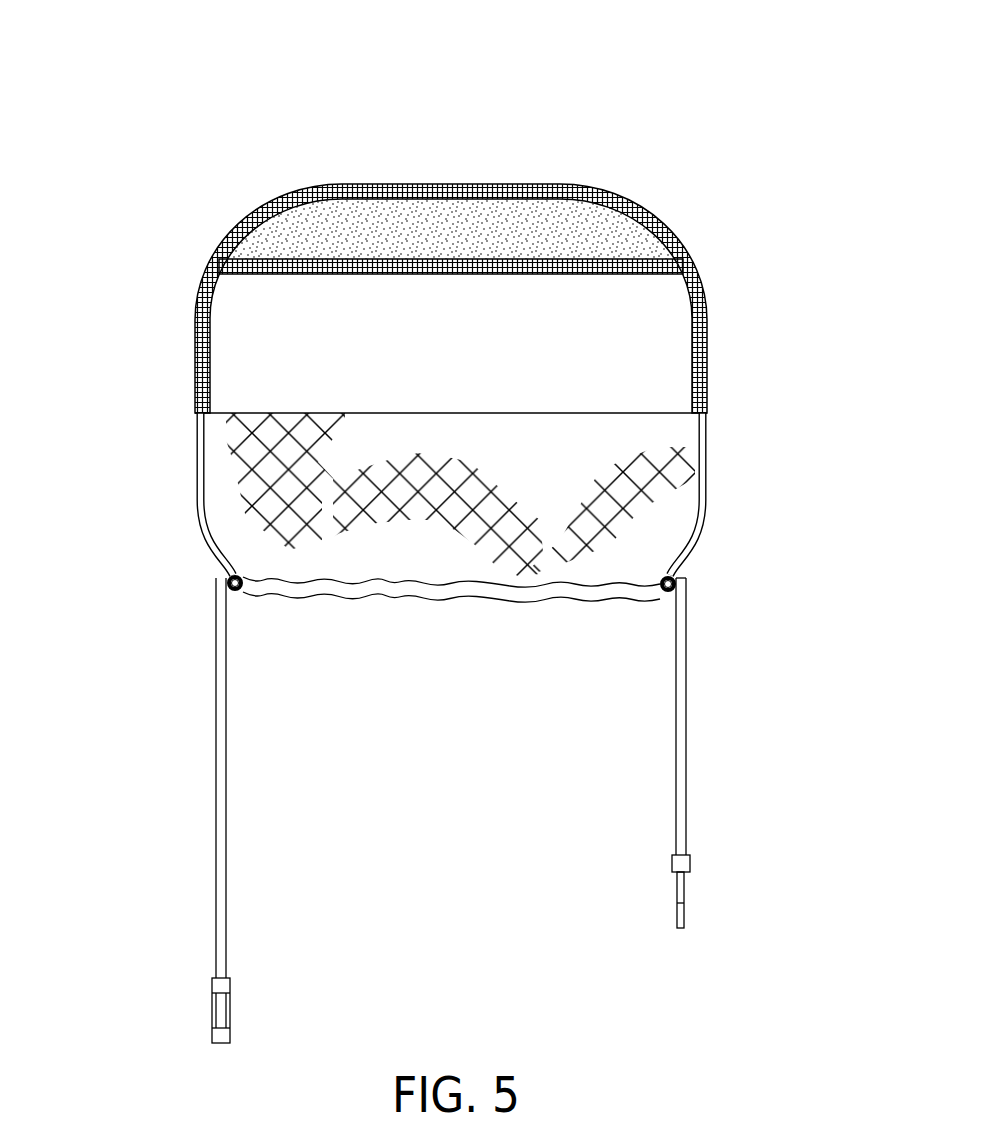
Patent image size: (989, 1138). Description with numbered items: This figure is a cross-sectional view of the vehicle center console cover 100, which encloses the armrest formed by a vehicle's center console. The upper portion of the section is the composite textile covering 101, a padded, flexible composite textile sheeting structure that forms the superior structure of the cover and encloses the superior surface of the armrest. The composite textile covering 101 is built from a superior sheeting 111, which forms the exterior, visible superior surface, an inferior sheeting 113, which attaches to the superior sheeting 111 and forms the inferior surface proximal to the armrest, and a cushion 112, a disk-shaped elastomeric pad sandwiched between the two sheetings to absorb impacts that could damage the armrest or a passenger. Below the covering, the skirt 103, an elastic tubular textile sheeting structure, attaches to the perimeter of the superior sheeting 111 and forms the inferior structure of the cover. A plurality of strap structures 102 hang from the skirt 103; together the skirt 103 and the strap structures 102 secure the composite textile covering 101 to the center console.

The vehicle center console cover 100 is at (200, 62).
The composite textile covering 101 is at (222, 223).
The strap structures 102 is at (217, 818).
The skirt 103 is at (197, 474).
The superior sheeting 111 is at (625, 198).
The cushion 112 is at (553, 217).
The inferior sheeting 113 is at (585, 274).